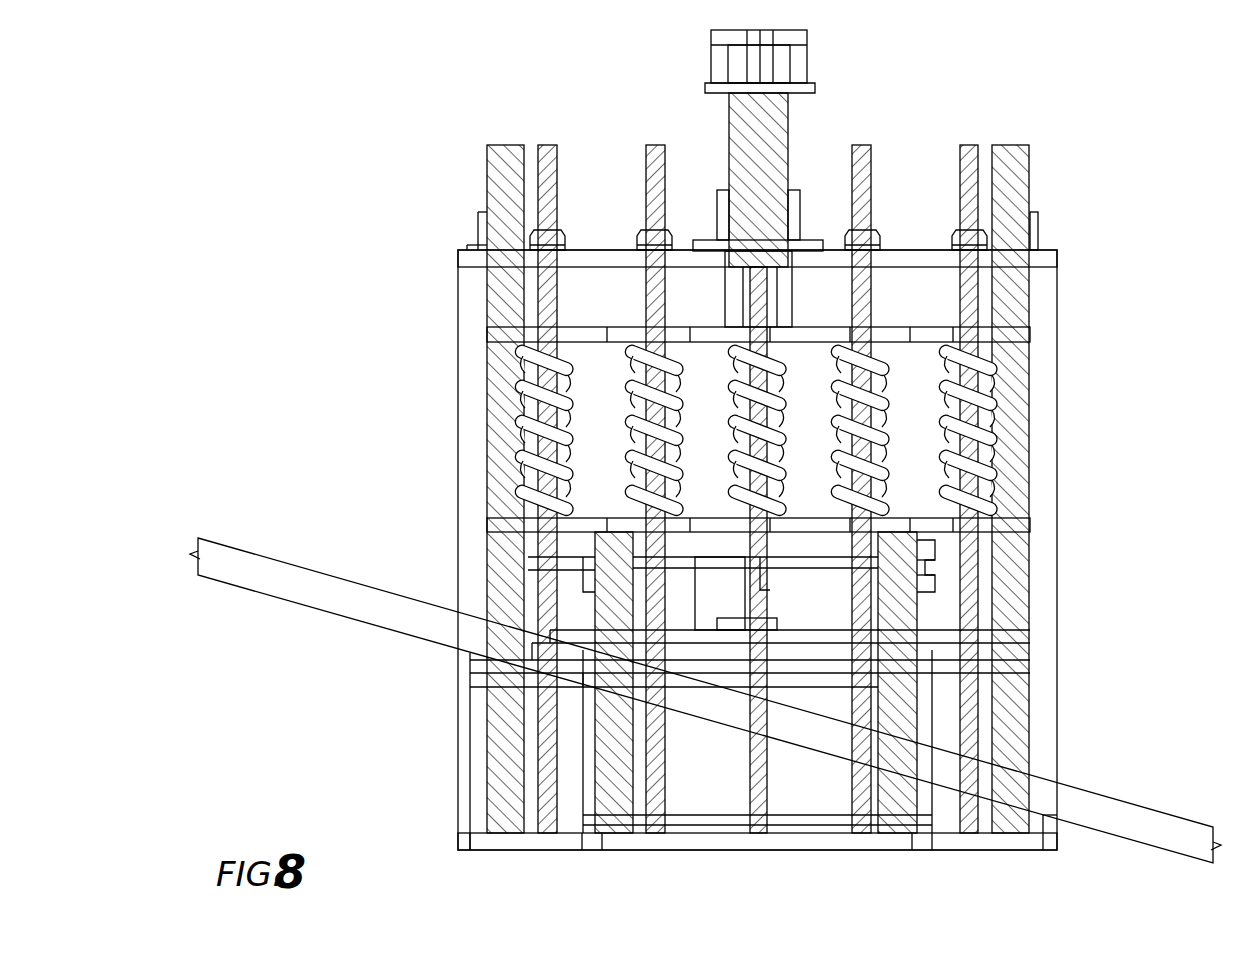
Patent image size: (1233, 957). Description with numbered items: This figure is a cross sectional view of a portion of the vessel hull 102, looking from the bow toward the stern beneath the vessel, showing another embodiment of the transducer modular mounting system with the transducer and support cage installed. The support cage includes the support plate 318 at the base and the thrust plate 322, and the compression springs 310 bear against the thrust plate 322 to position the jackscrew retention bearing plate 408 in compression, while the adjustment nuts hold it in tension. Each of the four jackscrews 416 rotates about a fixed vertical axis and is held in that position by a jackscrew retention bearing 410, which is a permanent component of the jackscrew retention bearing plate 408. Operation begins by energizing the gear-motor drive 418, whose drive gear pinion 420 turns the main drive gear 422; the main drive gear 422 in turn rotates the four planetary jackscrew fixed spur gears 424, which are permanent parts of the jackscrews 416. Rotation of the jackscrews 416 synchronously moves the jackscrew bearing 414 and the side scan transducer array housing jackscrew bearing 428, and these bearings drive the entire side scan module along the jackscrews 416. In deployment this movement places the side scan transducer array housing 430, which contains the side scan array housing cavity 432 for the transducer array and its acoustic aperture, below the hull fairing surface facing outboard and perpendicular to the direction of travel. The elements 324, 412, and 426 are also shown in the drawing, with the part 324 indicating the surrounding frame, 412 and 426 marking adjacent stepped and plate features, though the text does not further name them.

The vessel hull 102 is at (1135, 842).
The compression spring 310 is at (990, 360).
The support plate 318 is at (1025, 840).
The thrust plate 322 is at (942, 330).
The housing frame 324 is at (1045, 250).
The jackscrew retention bearing plate 408 is at (940, 525).
The jackscrew retention bearing 410 is at (928, 541).
The step 412 is at (945, 562).
The jackscrew bearing 414 is at (928, 580).
The jackscrew 416 is at (900, 610).
The gear-motor drive 418 is at (700, 578).
The drive gear pinion 420 is at (737, 631).
The main drive gear 422 is at (677, 630).
The planetary jackscrew fixed spur gear 424 is at (575, 633).
The plate 426 is at (518, 652).
The side scan transducer array housing jackscrew bearing 428 is at (583, 670).
The side scan transducer array housing 430 is at (933, 687).
The side scan array housing cavity 432 is at (817, 700).